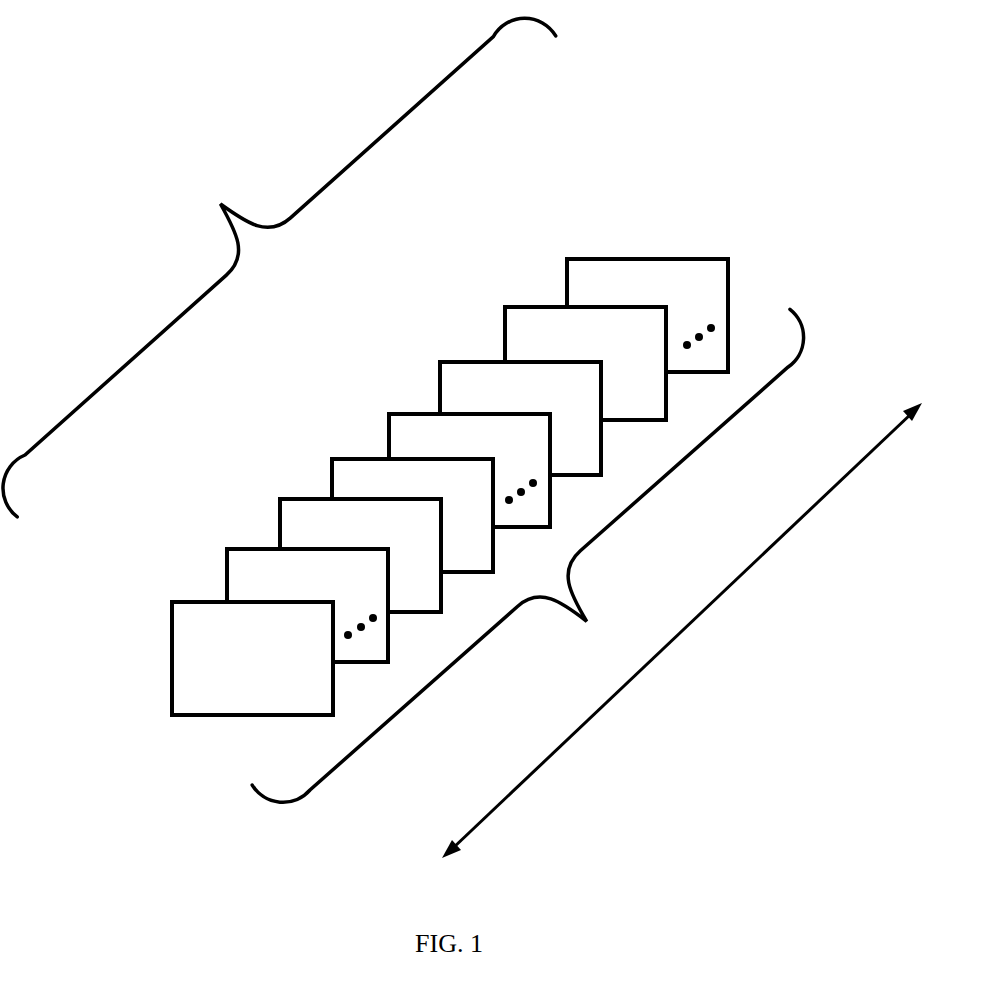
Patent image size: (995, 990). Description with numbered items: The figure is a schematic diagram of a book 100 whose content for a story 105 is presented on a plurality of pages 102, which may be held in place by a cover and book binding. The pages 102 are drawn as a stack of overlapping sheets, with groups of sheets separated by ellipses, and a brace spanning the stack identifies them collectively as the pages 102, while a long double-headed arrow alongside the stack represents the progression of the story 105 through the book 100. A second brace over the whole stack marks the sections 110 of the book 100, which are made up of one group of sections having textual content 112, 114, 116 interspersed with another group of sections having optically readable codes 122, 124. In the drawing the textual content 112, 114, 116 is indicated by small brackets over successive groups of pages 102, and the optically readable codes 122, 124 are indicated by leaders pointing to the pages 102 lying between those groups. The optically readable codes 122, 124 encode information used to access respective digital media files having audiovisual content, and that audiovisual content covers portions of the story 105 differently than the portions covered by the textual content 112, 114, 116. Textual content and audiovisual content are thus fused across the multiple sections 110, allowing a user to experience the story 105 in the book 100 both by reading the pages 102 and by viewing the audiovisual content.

The book 100 is at (146, 709).
The pages 102 is at (554, 584).
The story 105 is at (682, 630).
The sections 110 is at (278, 258).
The textual content 112 is at (238, 596).
The textual content 114 is at (403, 455).
The textual content 116 is at (580, 302).
The optically readable code 122 is at (309, 509).
The optically readable code 124 is at (474, 365).